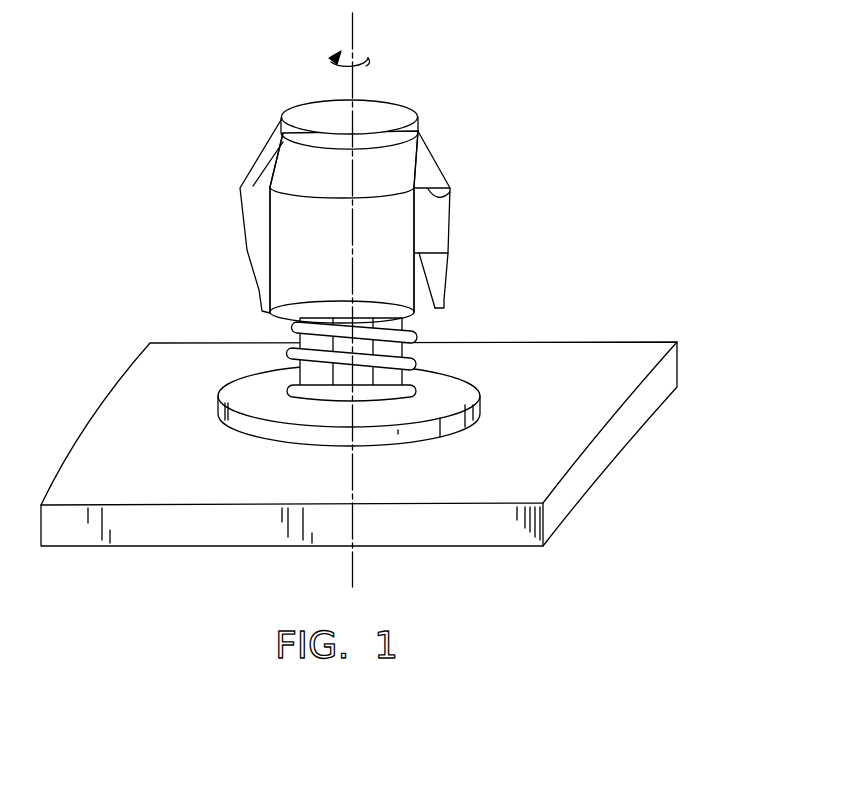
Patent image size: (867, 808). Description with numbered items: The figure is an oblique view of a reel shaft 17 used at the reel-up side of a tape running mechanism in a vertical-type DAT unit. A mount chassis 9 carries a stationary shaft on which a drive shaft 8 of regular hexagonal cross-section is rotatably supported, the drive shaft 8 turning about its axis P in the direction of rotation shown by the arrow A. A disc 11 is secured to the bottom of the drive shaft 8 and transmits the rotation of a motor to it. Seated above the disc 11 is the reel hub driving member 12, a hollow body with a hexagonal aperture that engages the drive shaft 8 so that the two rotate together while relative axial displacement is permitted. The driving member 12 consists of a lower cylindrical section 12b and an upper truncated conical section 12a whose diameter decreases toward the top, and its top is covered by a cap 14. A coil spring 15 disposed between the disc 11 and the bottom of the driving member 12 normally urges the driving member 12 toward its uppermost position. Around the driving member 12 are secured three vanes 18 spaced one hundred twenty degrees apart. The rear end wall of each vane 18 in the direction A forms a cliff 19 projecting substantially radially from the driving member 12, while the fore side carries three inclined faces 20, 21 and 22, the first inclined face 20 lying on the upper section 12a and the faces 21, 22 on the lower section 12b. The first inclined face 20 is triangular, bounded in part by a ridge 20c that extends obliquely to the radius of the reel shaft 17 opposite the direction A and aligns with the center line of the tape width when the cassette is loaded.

The drive shaft 8 is at (413, 341).
The mount chassis 9 is at (617, 353).
The disc 11 is at (447, 403).
The reel hub driving member 12 is at (267, 145).
The upper truncated conical section 12a is at (297, 174).
The lower cylindrical section 12b is at (303, 262).
The cap 14 is at (282, 123).
The coil spring 15 is at (297, 352).
The reel shaft 17 is at (413, 98).
The vanes 18 is at (442, 147).
The cliffs 19 is at (263, 234).
The first inclined face 20 is at (432, 173).
The ridge of first inclined face 20c is at (450, 197).
The second inclined face 21 is at (435, 230).
The third inclined face 22 is at (432, 273).
The axis P is at (350, 33).
The direction of rotation A is at (372, 63).